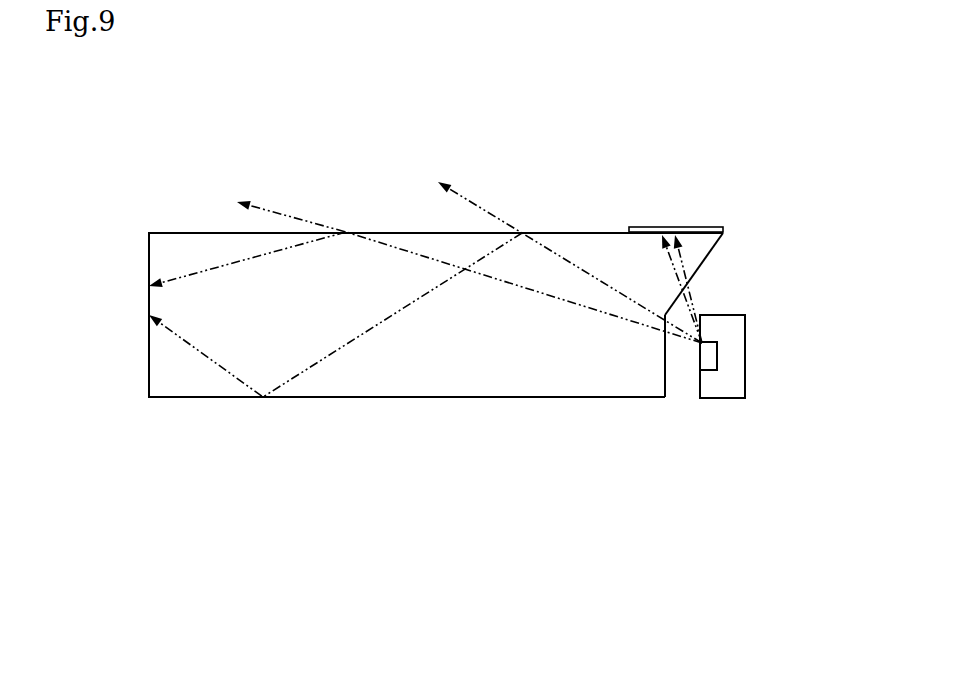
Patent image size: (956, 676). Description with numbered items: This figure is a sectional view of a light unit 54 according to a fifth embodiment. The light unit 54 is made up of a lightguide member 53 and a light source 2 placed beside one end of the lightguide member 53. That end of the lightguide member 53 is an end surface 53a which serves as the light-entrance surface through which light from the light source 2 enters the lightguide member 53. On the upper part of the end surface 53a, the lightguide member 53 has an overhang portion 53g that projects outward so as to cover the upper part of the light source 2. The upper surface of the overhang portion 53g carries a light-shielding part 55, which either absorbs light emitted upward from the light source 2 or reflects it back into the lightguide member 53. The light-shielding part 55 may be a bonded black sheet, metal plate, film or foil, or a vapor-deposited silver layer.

The lightguide member 53 is at (542, 220).
The end surface 53a is at (665, 358).
The overhang portion 53g is at (723, 232).
The light unit 54 is at (750, 178).
The light-shielding part 55 is at (676, 228).
The light source 2 is at (745, 353).